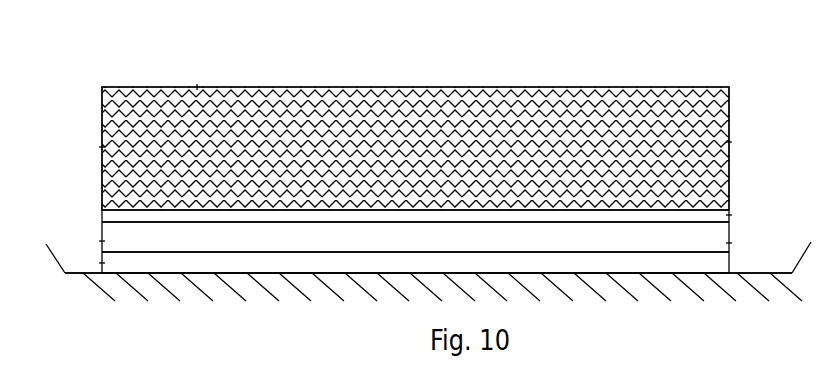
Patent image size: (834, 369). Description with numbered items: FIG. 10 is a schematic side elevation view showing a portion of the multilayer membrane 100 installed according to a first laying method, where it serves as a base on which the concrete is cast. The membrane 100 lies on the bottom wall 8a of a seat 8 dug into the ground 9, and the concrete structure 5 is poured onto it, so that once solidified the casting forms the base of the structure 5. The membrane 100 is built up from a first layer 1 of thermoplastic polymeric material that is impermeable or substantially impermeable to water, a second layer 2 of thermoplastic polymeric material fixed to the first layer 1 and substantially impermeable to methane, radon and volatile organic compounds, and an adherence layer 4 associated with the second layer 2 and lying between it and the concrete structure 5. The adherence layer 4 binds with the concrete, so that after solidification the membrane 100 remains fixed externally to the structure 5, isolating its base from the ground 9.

The multilayer membrane 100 is at (741, 236).
The concrete structure 5 is at (493, 125).
The adherence layer 4 is at (140, 217).
The second layer 2 is at (348, 240).
The first layer 1 is at (468, 262).
The ground 9 is at (507, 290).
The seat 8 is at (83, 250).
The wall of the seat 8a is at (758, 270).